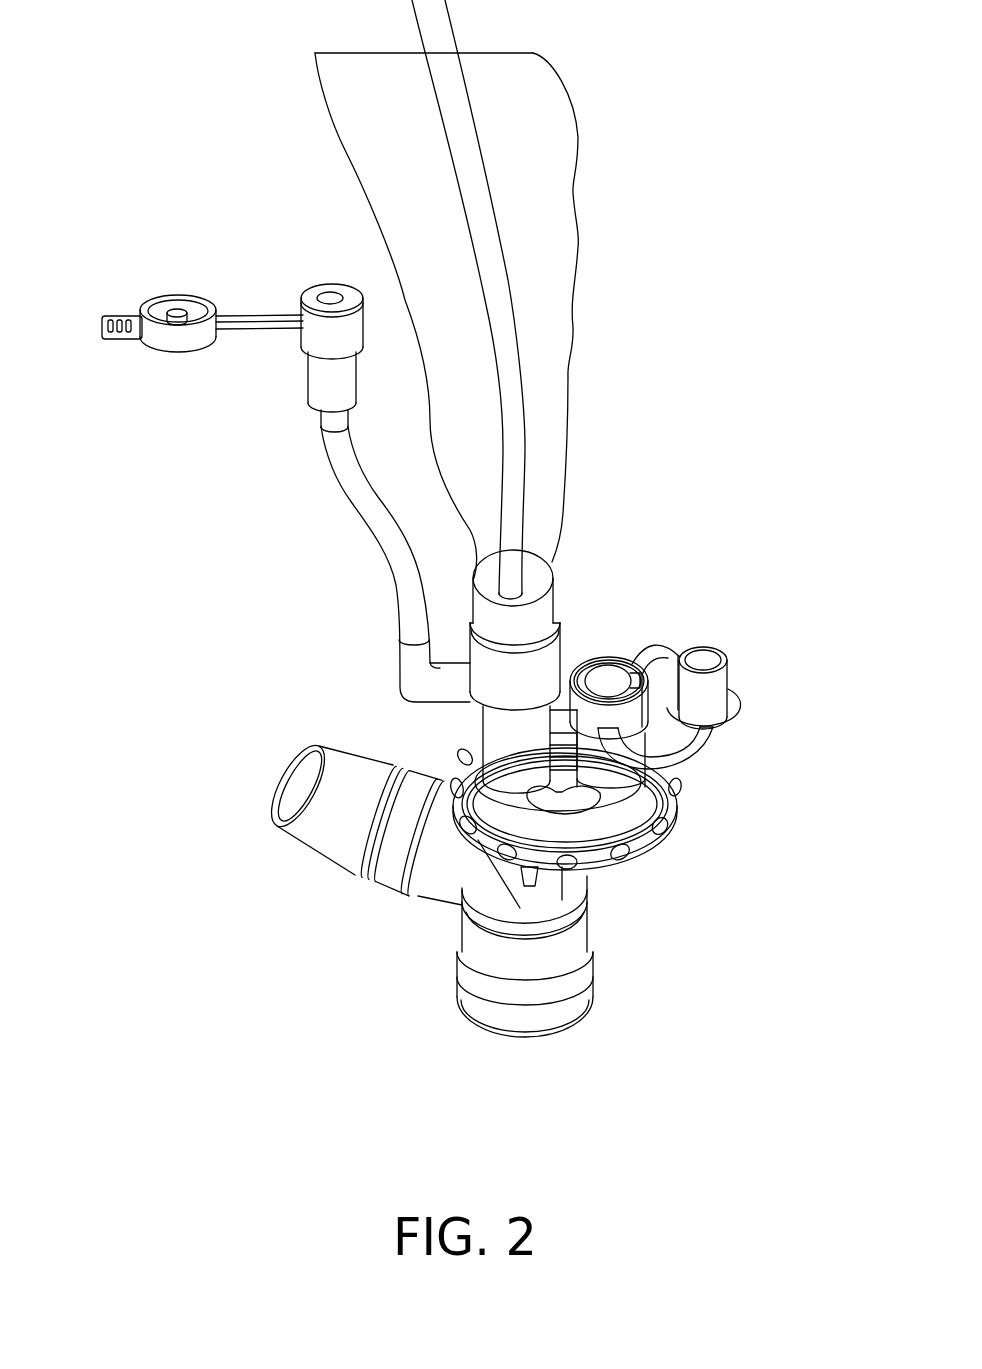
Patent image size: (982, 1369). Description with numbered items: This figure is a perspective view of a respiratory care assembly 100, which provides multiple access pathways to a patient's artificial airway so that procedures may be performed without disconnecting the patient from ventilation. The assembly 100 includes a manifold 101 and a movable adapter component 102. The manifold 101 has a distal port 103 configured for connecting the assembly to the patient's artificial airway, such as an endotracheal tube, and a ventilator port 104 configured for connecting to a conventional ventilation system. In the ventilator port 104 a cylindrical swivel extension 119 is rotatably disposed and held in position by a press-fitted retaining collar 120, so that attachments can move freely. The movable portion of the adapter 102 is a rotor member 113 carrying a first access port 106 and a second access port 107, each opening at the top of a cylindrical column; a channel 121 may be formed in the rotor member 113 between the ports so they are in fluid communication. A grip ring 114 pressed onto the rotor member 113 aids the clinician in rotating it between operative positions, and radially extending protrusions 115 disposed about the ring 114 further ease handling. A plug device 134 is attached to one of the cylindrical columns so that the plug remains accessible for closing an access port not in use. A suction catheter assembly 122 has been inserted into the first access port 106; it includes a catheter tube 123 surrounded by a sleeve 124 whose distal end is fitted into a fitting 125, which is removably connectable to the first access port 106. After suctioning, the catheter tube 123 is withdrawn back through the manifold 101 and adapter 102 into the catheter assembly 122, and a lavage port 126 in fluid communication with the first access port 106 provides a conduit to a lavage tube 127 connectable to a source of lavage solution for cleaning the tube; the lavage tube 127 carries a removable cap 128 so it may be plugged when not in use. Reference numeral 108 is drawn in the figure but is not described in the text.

The respiratory care assembly 100 is at (208, 616).
The manifold 101 is at (543, 900).
The movable adapter component 102 is at (638, 578).
The distal port 103 is at (548, 1038).
The ventilator port 104 is at (302, 785).
The first access port 106 is at (502, 732).
The second access port 107 is at (603, 677).
The housing 108 is at (462, 890).
The rotor member 113 is at (630, 802).
The grip ring 114 is at (640, 838).
The radially extending protrusions 115 is at (622, 855).
The swivel extension 119 is at (318, 835).
The retaining collar 120 is at (347, 863).
The channel 121 is at (563, 772).
The catheter assembly 122 is at (632, 130).
The catheter tube 123 is at (505, 315).
The sleeve 124 is at (552, 258).
The fitting 125 is at (545, 603).
The lavage port 126 is at (483, 663).
The lavage tube 127 is at (388, 562).
The removable cap 128 is at (183, 297).
The plug device 134 is at (718, 687).